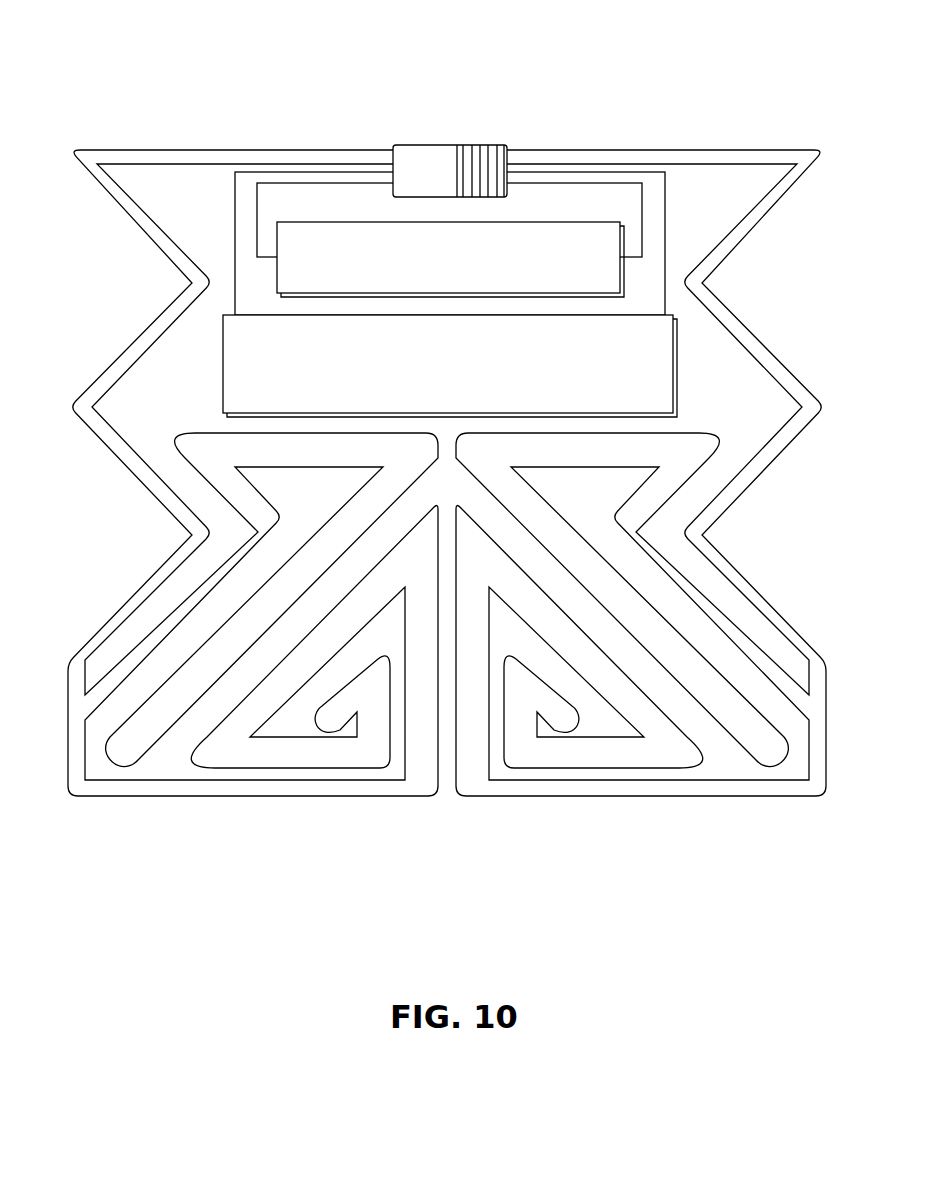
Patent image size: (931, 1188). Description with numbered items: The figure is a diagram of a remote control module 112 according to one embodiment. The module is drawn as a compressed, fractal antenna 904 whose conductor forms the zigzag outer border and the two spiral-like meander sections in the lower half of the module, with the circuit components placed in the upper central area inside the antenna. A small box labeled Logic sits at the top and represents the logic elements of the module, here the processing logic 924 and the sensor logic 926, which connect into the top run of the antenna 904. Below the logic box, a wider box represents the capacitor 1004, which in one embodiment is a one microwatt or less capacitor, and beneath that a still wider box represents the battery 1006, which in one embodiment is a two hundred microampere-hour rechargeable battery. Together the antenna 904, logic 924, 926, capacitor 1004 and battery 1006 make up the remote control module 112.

The remote control module 112 is at (447, 412).
The antenna 904 is at (121, 600).
The processing logic 924 is at (430, 145).
The sensor logic 926 is at (466, 135).
The capacitor 1004 is at (578, 222).
The battery 1006 is at (673, 368).